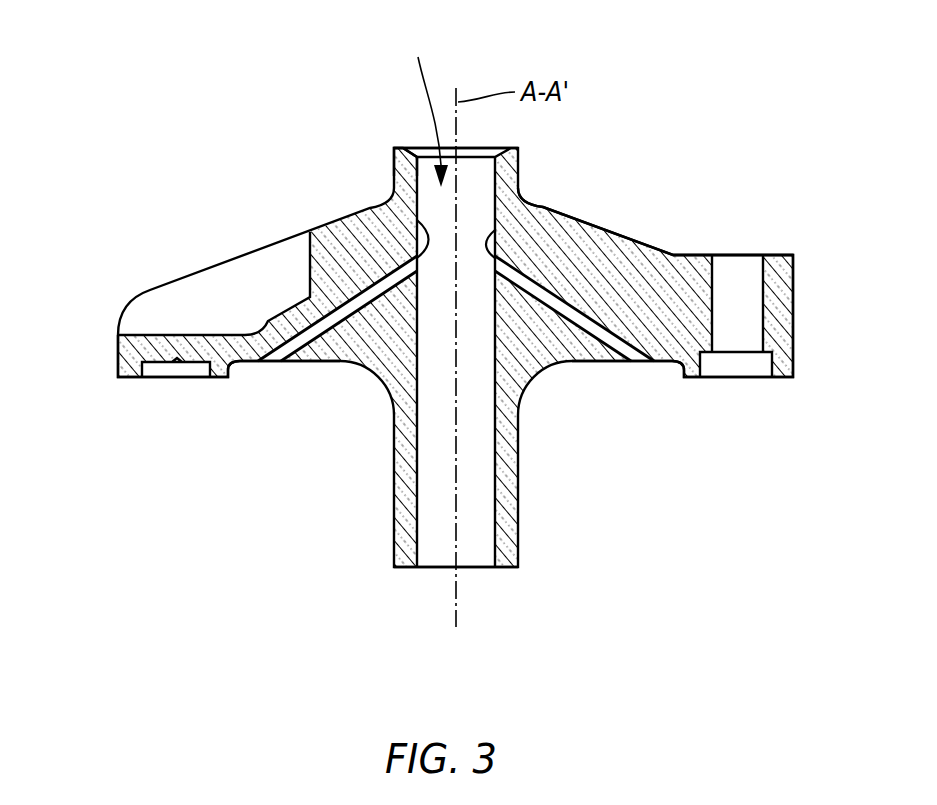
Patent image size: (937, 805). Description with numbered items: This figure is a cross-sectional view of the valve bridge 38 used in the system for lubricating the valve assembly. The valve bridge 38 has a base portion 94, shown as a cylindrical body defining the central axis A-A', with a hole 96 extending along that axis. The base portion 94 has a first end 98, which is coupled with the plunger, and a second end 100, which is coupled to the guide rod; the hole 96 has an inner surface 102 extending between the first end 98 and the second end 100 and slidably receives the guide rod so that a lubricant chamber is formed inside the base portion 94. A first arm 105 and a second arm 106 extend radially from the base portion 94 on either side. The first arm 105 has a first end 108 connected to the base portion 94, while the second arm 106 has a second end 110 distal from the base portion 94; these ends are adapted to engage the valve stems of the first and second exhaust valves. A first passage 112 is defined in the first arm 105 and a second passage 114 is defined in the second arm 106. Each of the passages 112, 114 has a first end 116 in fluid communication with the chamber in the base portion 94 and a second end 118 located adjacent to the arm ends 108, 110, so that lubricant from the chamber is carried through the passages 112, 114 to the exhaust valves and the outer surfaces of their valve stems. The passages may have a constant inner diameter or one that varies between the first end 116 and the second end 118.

The valve bridge 38 is at (795, 92).
The base portion 94 is at (507, 165).
The hole 96 is at (428, 109).
The first end 98 is at (399, 147).
The second end 100 is at (410, 567).
The inner surface 102 is at (495, 523).
The first arm 105 is at (343, 237).
The second arm 106 is at (617, 260).
The first end 108 is at (118, 352).
The second end 110 is at (793, 318).
The first passage 112 is at (305, 337).
The second passage 114 is at (602, 333).
The first end 116 is at (420, 228).
The second end 118 is at (268, 362).